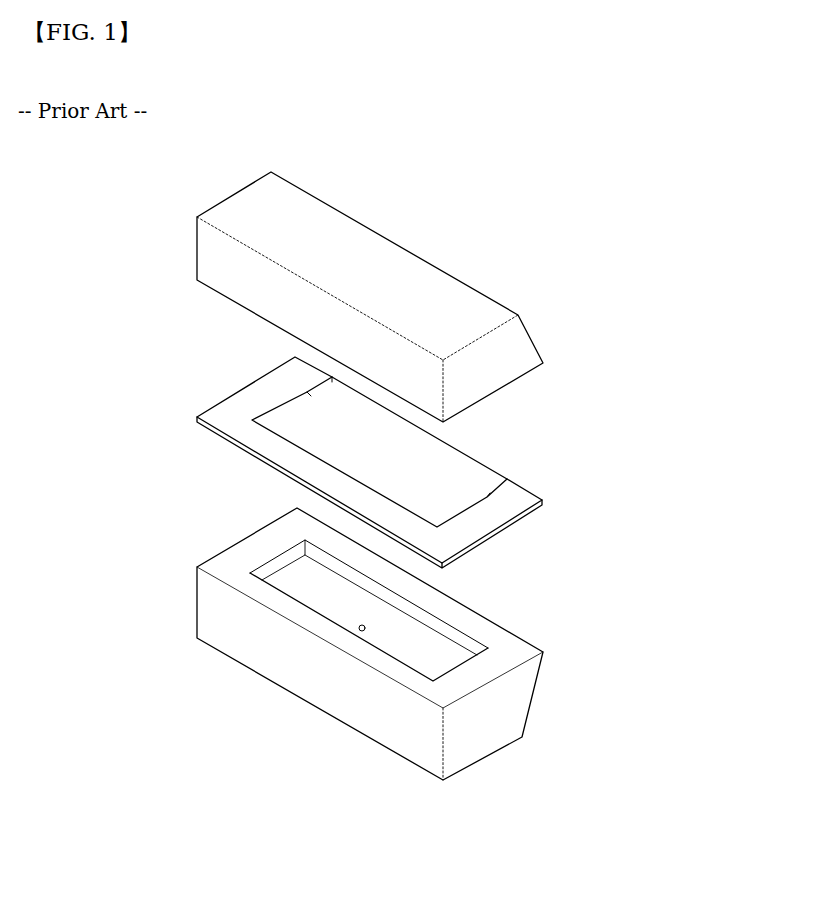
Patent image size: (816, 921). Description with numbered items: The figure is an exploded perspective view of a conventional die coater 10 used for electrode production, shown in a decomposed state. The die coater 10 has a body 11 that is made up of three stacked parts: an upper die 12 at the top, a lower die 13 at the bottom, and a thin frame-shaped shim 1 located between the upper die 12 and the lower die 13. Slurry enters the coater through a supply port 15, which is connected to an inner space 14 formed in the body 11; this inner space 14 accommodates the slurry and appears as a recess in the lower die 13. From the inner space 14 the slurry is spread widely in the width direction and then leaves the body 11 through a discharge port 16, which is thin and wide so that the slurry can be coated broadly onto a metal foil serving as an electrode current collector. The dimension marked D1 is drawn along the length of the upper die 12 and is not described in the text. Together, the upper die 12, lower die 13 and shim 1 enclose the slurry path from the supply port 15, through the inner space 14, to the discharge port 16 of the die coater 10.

The die coater 10 is at (135, 211).
The body 11 is at (608, 382).
The upper die 12 is at (508, 375).
The lower die 13 is at (513, 629).
The inner space 14 is at (297, 577).
The supply port 15 is at (360, 630).
The discharge port 16 is at (433, 445).
The shim 1 is at (512, 479).
The width dimension D1 is at (430, 247).